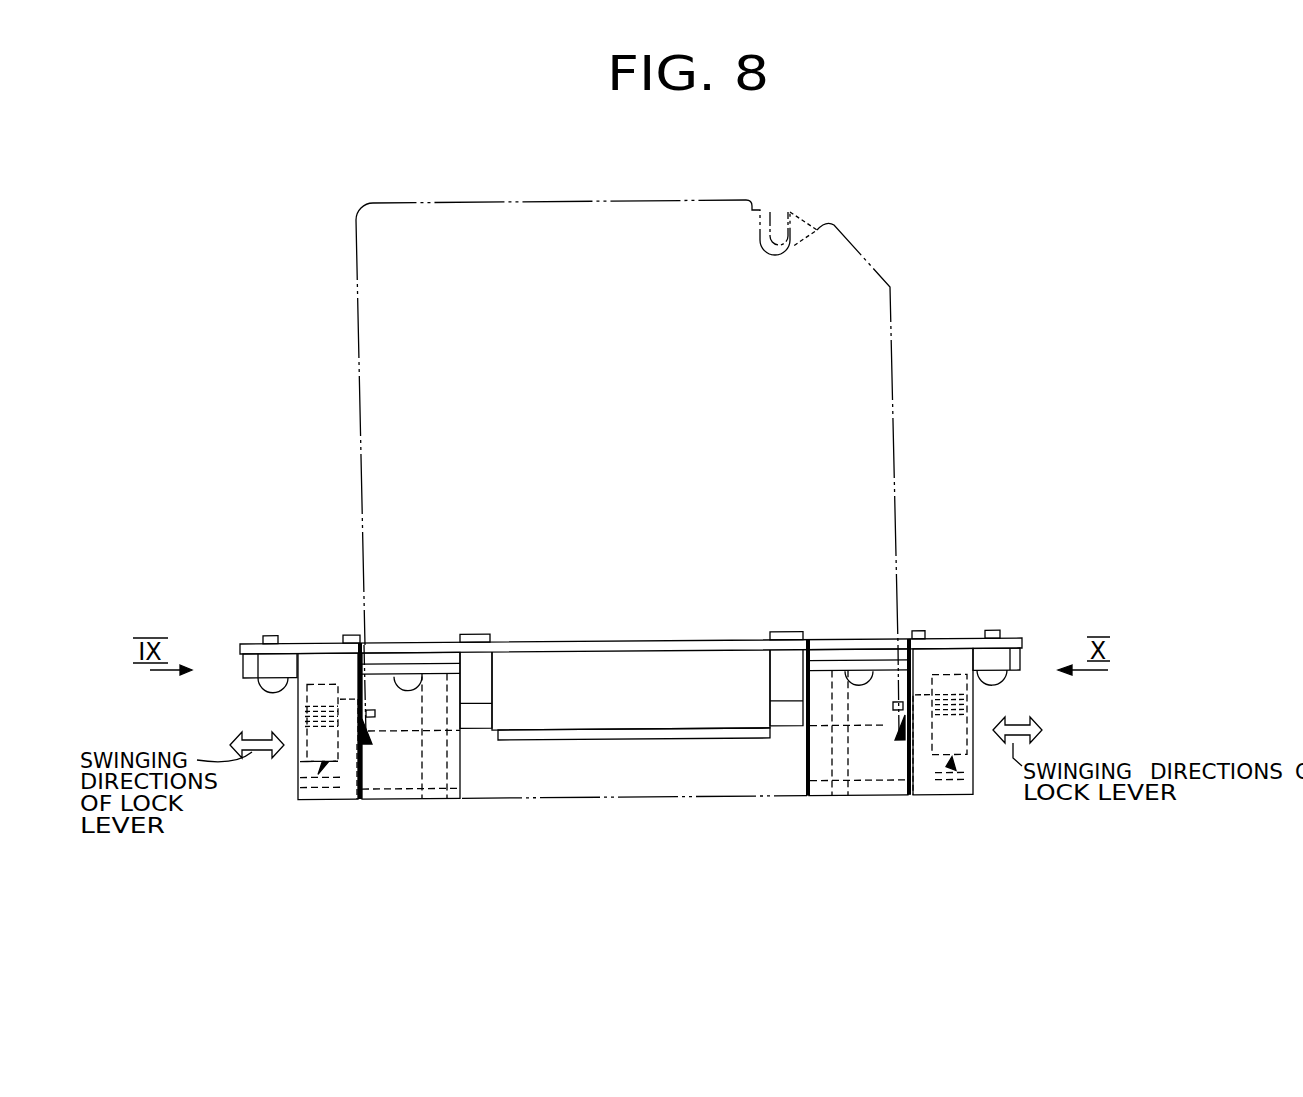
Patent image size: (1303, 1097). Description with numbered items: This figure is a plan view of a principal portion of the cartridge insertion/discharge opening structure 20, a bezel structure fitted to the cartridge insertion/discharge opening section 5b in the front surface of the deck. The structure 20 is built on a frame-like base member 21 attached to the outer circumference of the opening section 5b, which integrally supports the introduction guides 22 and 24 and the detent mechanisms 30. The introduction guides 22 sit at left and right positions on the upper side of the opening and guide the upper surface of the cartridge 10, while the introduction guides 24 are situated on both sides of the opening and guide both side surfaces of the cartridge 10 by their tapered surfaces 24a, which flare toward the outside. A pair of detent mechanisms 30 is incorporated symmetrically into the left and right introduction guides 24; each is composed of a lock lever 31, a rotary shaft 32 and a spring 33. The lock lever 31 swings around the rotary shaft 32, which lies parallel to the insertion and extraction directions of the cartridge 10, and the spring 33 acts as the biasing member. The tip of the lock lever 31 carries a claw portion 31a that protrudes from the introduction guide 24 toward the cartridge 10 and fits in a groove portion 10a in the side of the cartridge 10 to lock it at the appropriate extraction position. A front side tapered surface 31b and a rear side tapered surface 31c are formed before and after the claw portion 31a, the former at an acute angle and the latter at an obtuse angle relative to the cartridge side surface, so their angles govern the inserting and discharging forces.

The cartridge 10 is at (898, 353).
The groove portion 10a is at (375, 732).
The cartridge insertion/discharge opening structure 20 is at (617, 634).
The base member 21 is at (678, 641).
The introduction guide 22 is at (412, 770).
The introduction guide 24 is at (320, 662).
The tapered surface 24a is at (357, 745).
The detent mechanism 30 is at (312, 747).
The lock lever 31 is at (297, 758).
The claw portion 31a is at (350, 720).
The front side tapered surface 31b is at (900, 737).
The rear side tapered surface 31c is at (370, 708).
The rotary shaft 32 is at (300, 700).
The spring 33 is at (300, 720).
The cartridge insertion/discharge opening section 5b is at (625, 752).